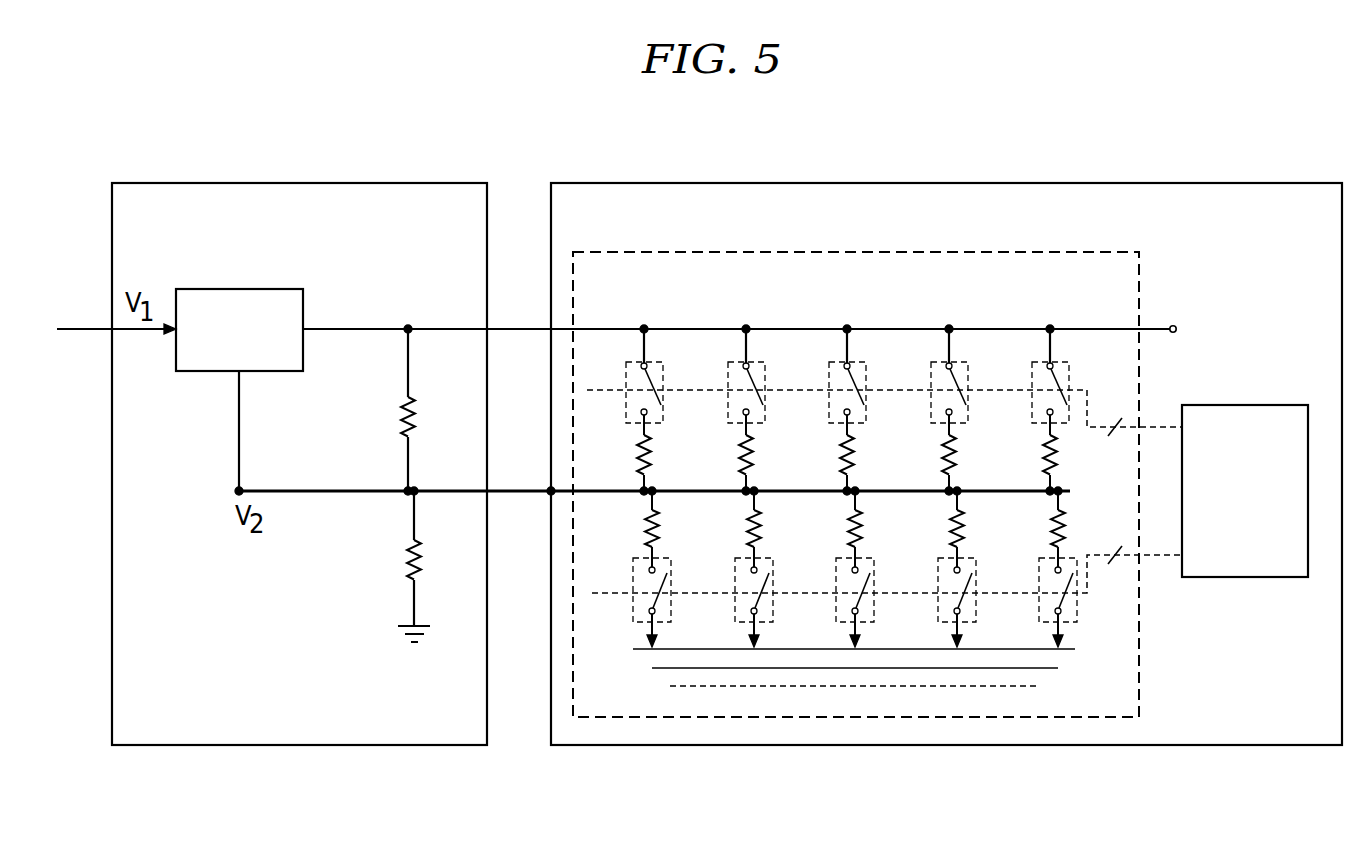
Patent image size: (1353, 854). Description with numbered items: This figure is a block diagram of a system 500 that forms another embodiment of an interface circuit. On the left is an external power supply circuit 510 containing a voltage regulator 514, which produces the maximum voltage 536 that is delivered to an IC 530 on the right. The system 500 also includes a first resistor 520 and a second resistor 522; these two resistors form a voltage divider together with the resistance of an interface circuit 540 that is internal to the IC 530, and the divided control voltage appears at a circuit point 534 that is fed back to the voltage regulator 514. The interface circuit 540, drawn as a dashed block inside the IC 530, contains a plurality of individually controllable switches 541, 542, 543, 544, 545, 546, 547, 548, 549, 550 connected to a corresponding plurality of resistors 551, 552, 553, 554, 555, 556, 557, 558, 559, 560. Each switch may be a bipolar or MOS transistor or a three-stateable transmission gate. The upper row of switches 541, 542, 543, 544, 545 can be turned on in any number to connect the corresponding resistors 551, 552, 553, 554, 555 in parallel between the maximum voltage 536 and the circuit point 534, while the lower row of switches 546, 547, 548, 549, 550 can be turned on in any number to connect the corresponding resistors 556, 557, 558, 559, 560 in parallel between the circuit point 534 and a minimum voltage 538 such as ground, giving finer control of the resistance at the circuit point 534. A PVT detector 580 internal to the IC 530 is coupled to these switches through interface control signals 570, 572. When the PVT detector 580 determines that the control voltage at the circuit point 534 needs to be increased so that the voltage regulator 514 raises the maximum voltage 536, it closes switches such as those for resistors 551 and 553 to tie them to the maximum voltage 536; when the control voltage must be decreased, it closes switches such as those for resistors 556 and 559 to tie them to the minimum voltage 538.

The system 500 is at (1060, 112).
The external power supply circuit 510 is at (428, 183).
The voltage regulator 514 is at (243, 289).
The first resistor R1 520 is at (402, 411).
The second resistor R2 522 is at (408, 553).
The IC 530 is at (1280, 183).
The circuit point 534 is at (550, 492).
The maximum voltage Vdd 536 is at (1200, 333).
The minimum voltage 538 is at (1075, 649).
The interface circuit 540 is at (1050, 252).
The switch 541 is at (626, 380).
The switch 542 is at (728, 380).
The switch 543 is at (829, 380).
The switch 544 is at (931, 380).
The switch 545 is at (1032, 380).
The switch 546 is at (628, 603).
The switch 547 is at (730, 603).
The switch 548 is at (831, 603).
The switch 549 is at (933, 603).
The switch 550 is at (1034, 603).
The resistor 551 is at (638, 454).
The resistor 552 is at (740, 454).
The resistor 553 is at (841, 454).
The resistor 554 is at (943, 454).
The resistor 555 is at (1044, 454).
The resistor 556 is at (634, 524).
The resistor 557 is at (736, 524).
The resistor 558 is at (837, 524).
The resistor 559 is at (939, 524).
The resistor 560 is at (1040, 524).
The interface control signal 570 is at (1168, 427).
The interface control signal 572 is at (1168, 558).
The PVT detector 580 is at (1253, 405).